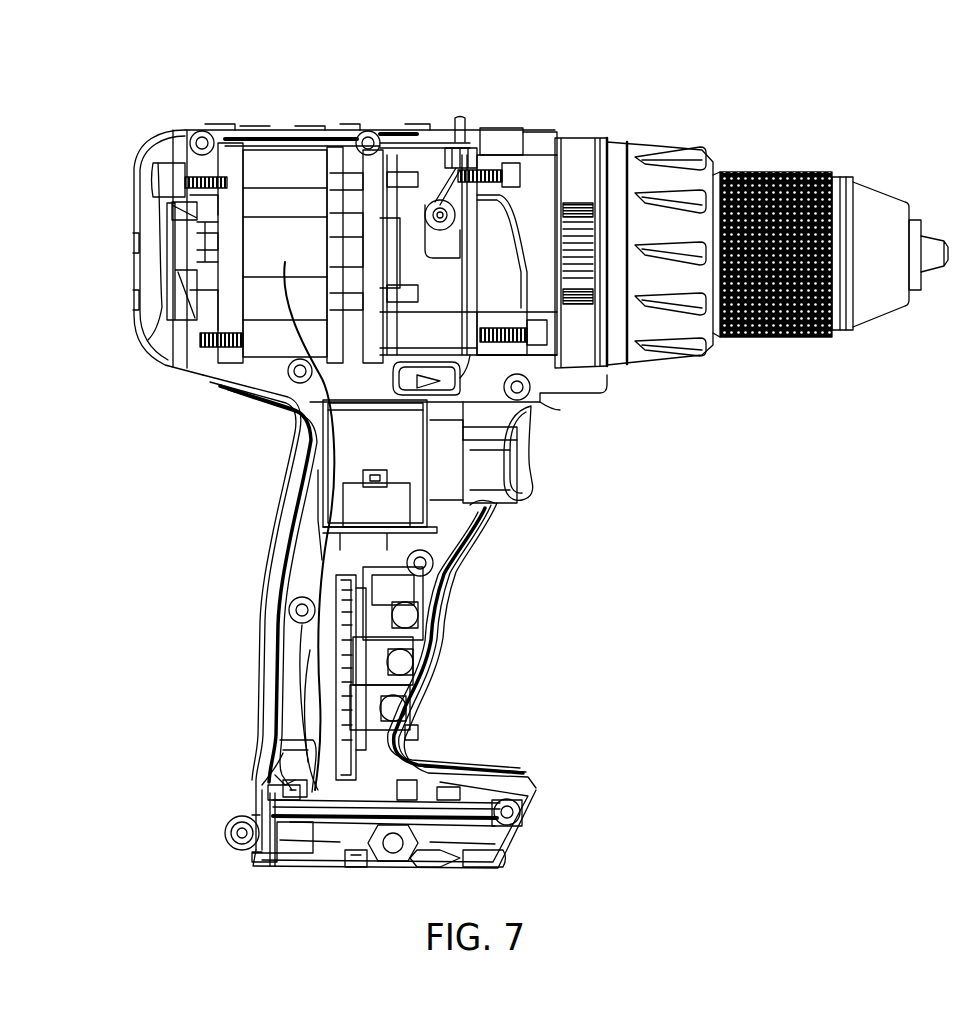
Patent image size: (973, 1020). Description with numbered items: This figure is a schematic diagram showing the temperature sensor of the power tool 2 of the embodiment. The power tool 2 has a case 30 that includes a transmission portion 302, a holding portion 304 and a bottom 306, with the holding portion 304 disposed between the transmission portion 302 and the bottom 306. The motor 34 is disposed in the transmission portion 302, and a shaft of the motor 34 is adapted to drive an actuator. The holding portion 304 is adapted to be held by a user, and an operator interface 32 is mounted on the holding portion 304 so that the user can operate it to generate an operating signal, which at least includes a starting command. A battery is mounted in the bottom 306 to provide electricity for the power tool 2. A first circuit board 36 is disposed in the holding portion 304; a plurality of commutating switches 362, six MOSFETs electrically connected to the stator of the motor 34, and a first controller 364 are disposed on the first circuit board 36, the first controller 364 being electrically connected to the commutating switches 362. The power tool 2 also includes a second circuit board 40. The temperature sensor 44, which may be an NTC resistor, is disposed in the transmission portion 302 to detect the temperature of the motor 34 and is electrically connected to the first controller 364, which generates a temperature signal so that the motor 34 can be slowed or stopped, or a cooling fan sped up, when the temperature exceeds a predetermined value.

The power tool 2 is at (878, 163).
The case 30 is at (215, 390).
The transmission portion 302 is at (410, 113).
The holding portion 304 is at (458, 652).
The bottom 306 is at (533, 843).
The operator interface 32 is at (548, 465).
The motor 34 is at (262, 158).
The first circuit board 36 is at (333, 622).
The commutating switches 362 is at (385, 608).
The first controller 364 is at (415, 728).
The second circuit board 40 is at (275, 785).
The temperature sensor 44 is at (285, 640).